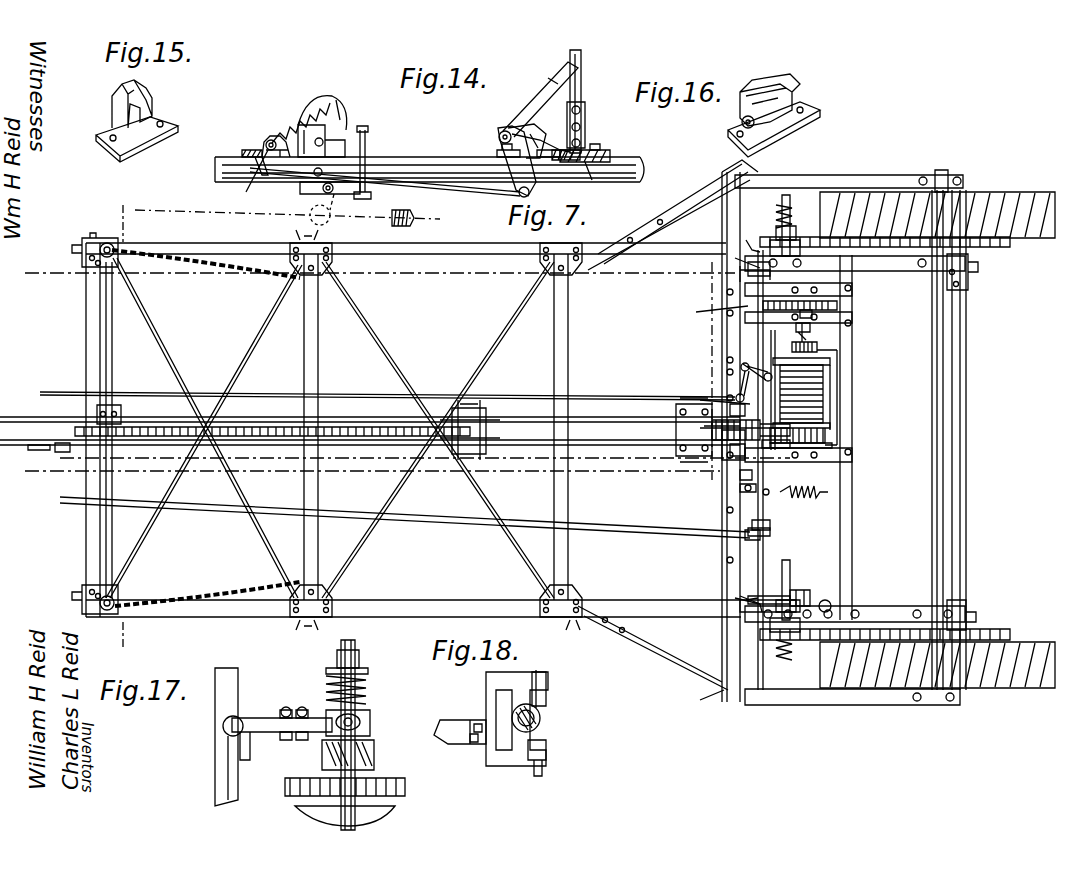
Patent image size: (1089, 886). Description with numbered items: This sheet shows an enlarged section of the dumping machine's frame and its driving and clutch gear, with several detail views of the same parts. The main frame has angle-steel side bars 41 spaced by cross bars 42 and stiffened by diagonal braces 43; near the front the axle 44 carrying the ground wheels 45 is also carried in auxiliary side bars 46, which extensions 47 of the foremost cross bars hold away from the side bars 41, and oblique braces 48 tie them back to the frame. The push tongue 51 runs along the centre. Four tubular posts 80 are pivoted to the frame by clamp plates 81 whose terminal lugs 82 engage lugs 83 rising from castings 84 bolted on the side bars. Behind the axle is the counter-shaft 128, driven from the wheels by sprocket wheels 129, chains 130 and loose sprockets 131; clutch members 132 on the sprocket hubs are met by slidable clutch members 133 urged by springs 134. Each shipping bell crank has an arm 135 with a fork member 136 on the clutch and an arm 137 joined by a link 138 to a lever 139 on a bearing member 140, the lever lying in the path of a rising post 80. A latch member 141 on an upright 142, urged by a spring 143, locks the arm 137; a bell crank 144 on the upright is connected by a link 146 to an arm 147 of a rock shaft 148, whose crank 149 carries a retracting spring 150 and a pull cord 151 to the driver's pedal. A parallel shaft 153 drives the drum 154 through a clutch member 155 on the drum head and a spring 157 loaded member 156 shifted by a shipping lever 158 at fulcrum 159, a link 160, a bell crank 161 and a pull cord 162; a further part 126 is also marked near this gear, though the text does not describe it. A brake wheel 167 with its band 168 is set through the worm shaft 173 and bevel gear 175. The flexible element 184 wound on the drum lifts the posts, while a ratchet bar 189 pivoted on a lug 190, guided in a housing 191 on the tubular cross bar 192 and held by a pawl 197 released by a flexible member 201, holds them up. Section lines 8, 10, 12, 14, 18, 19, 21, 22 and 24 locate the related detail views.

In FIG. 7, the section line 8— 8 is at (1030, 290).
In FIG. 7, the section line 10— 10 is at (126, 640).
In FIG. 7, the section line 12— 12 is at (52, 466).
In FIG. 7, the section line 14— 14 is at (896, 292).
In FIG. 17, the section line 18— 18 is at (372, 722).
In FIG. 7, the section line 19— 19 is at (720, 478).
In FIG. 7, the section line 21— 21 is at (1050, 626).
In FIG. 7, the section line 22— 22 is at (596, 456).
In FIG. 7, the section line 24— 24 is at (1061, 631).
In FIG. 14, the side bars 41 is at (450, 180).
In FIG. 7, the side bars 41 is at (478, 604).
In FIG. 14, the cross bars 42 is at (600, 172).
In FIG. 7, the cross bars 42 is at (958, 448).
In FIG. 7, the diagonal braces 43 is at (405, 386).
In FIG. 7, the axle 44 is at (950, 418).
In FIG. 7, the ground wheels 45 is at (992, 668).
In FIG. 7, the auxiliary side bars 46 is at (905, 182).
In FIG. 7, the extensions 47 is at (706, 690).
In FIG. 7, the oblique braces 48 is at (660, 650).
In FIG. 7, the push tongue 51 is at (640, 458).
In FIG. 14, the posts 80 is at (586, 60).
In FIG. 7, the posts 80 is at (835, 596).
In FIG. 14, the clamp plates 81 is at (592, 120).
In FIG. 14, the terminal lugs 82 is at (552, 142).
In FIG. 14, the lugs 83 is at (546, 88).
In FIG. 14, the plates or castings 84 is at (602, 152).
In FIG. 7, the plates or castings 84 is at (92, 242).
In FIG. 7, the rod 126 is at (756, 336).
In FIG. 7, the counter-shaft 128 is at (770, 518).
In FIG. 17, the counter-shaft 128 is at (356, 650).
In FIG. 18, the counter-shaft 128 is at (540, 722).
In FIG. 7, the sprocket wheels 129 is at (975, 620).
In FIG. 7, the chains 130 is at (918, 634).
In FIG. 7, the sprockets 131 is at (722, 700).
In FIG. 17, the sprockets 131 is at (398, 802).
In FIG. 7, the clutch members 132 is at (800, 632).
In FIG. 17, the clutch members 132 is at (378, 766).
In FIG. 7, the slidable clutch members 133 is at (796, 612).
In FIG. 17, the slidable clutch members 133 is at (364, 730).
In FIG. 18, the slidable clutch members 133 is at (540, 740).
In FIG. 7, the springs 134 is at (782, 660).
In FIG. 17, the springs 134 is at (364, 684).
In FIG. 7, the arm 135 is at (740, 606).
In FIG. 17, the arm 135 is at (256, 714).
In FIG. 18, the arm 135 is at (456, 724).
In FIG. 7, the fork member 136 is at (776, 622).
In FIG. 17, the fork member 136 is at (314, 716).
In FIG. 18, the fork member 136 is at (490, 766).
In FIG. 14, the arm 137 is at (266, 175).
In FIG. 7, the arm 137 is at (744, 598).
In FIG. 17, the arm 137 is at (232, 768).
In FIG. 14, the link 138 is at (444, 190).
In FIG. 7, the link 138 is at (780, 600).
In FIG. 14, the lever 139 is at (498, 148).
In FIG. 7, the lever 139 is at (838, 600).
In FIG. 16, the bearing member 140 is at (762, 90).
In FIG. 14, the bearing member 140 is at (516, 128).
In FIG. 7, the bearing member 140 is at (816, 590).
In FIG. 14, the latch member 141 is at (270, 136).
In FIG. 7, the latch member 141 is at (742, 618).
In FIG. 15, the upright 142 is at (145, 135).
In FIG. 7, the upright 142 is at (688, 690).
In FIG. 14, the spring 143 is at (330, 96).
In FIG. 14, the bell crank 144 is at (342, 118).
In FIG. 7, the bell crank 144 is at (762, 580).
In FIG. 14, the link 146 is at (368, 150).
In FIG. 14, the arm 147 is at (362, 188).
In FIG. 7, the arm 147 is at (766, 596).
In FIG. 14, the rock shaft 148 is at (324, 192).
In FIG. 7, the rock shaft 148 is at (748, 562).
In FIG. 14, the arm or crank 149 is at (342, 209).
In FIG. 7, the arm or crank 149 is at (750, 532).
In FIG. 14, the retracting spring 150 is at (398, 208).
In FIG. 7, the retracting spring 150 is at (796, 494).
In FIG. 14, the pull cord 151 is at (287, 199).
In FIG. 7, the pull cord 151 is at (412, 506).
In FIG. 7, the shaft 153 is at (840, 470).
In FIG. 7, the drum 154 is at (834, 432).
In FIG. 7, the clutch member 155 is at (826, 400).
In FIG. 7, the clutch member 156 is at (840, 392).
In FIG. 7, the spring 157 is at (834, 356).
In FIG. 7, the shipping lever 158 is at (842, 362).
In FIG. 7, the fulcrum 159 is at (740, 364).
In FIG. 7, the link 160 is at (740, 380).
In FIG. 7, the bell crank 161 is at (736, 394).
In FIG. 7, the pull cord 162 is at (612, 392).
In FIG. 7, the brake wheel 167 is at (826, 466).
In FIG. 7, the brake band 168 is at (812, 446).
In FIG. 7, the shaft 173 is at (528, 426).
In FIG. 14, the bevel gear 175 is at (296, 130).
In FIG. 7, the flexible element 184 is at (842, 452).
In FIG. 17, the flexible element 184 is at (290, 740).
In FIG. 7, the ratchet bar 189 is at (372, 446).
In FIG. 7, the lug 190 is at (452, 470).
In FIG. 7, the housing 191 is at (122, 412).
In FIG. 7, the tubular cross bar 192 is at (114, 320).
In FIG. 7, the pawl 197 is at (148, 440).
In FIG. 7, the flexible member 201 is at (72, 470).